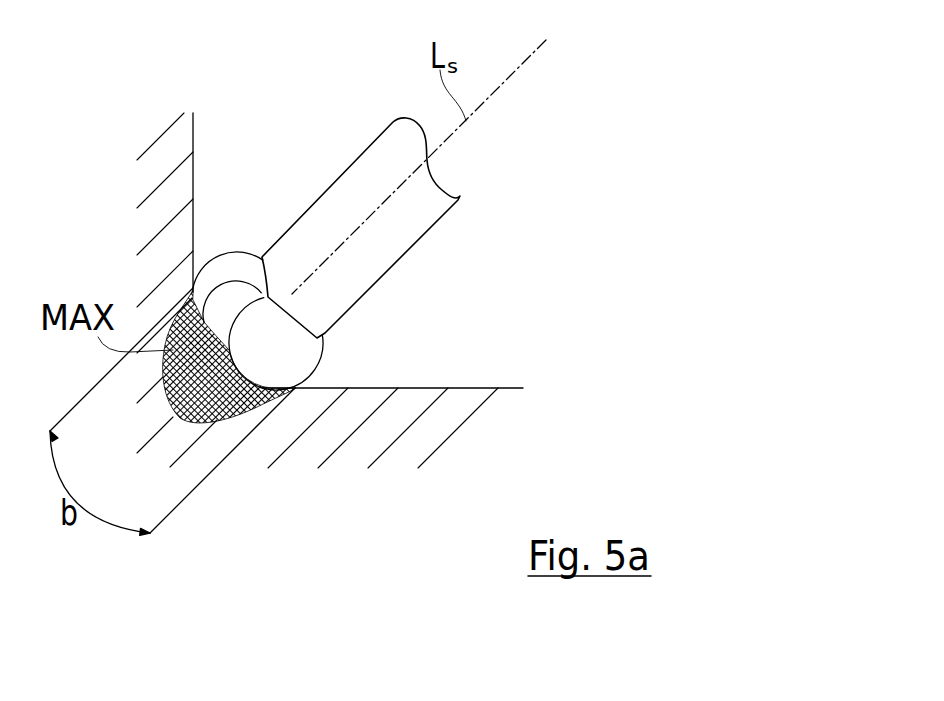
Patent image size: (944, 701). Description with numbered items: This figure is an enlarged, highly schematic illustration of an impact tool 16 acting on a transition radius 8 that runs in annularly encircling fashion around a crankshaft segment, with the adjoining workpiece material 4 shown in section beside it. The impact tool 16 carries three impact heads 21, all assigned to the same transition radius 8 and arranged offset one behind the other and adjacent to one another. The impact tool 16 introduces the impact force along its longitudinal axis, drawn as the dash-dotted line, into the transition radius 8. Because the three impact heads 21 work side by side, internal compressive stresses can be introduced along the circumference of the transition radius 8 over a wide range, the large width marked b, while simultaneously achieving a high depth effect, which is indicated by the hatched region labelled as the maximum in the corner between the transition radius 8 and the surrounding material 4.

The plate / workpiece 4 is at (452, 388).
The transition radius 8 is at (260, 389).
The impact tool 16 is at (347, 138).
The impact head 21 is at (268, 327).